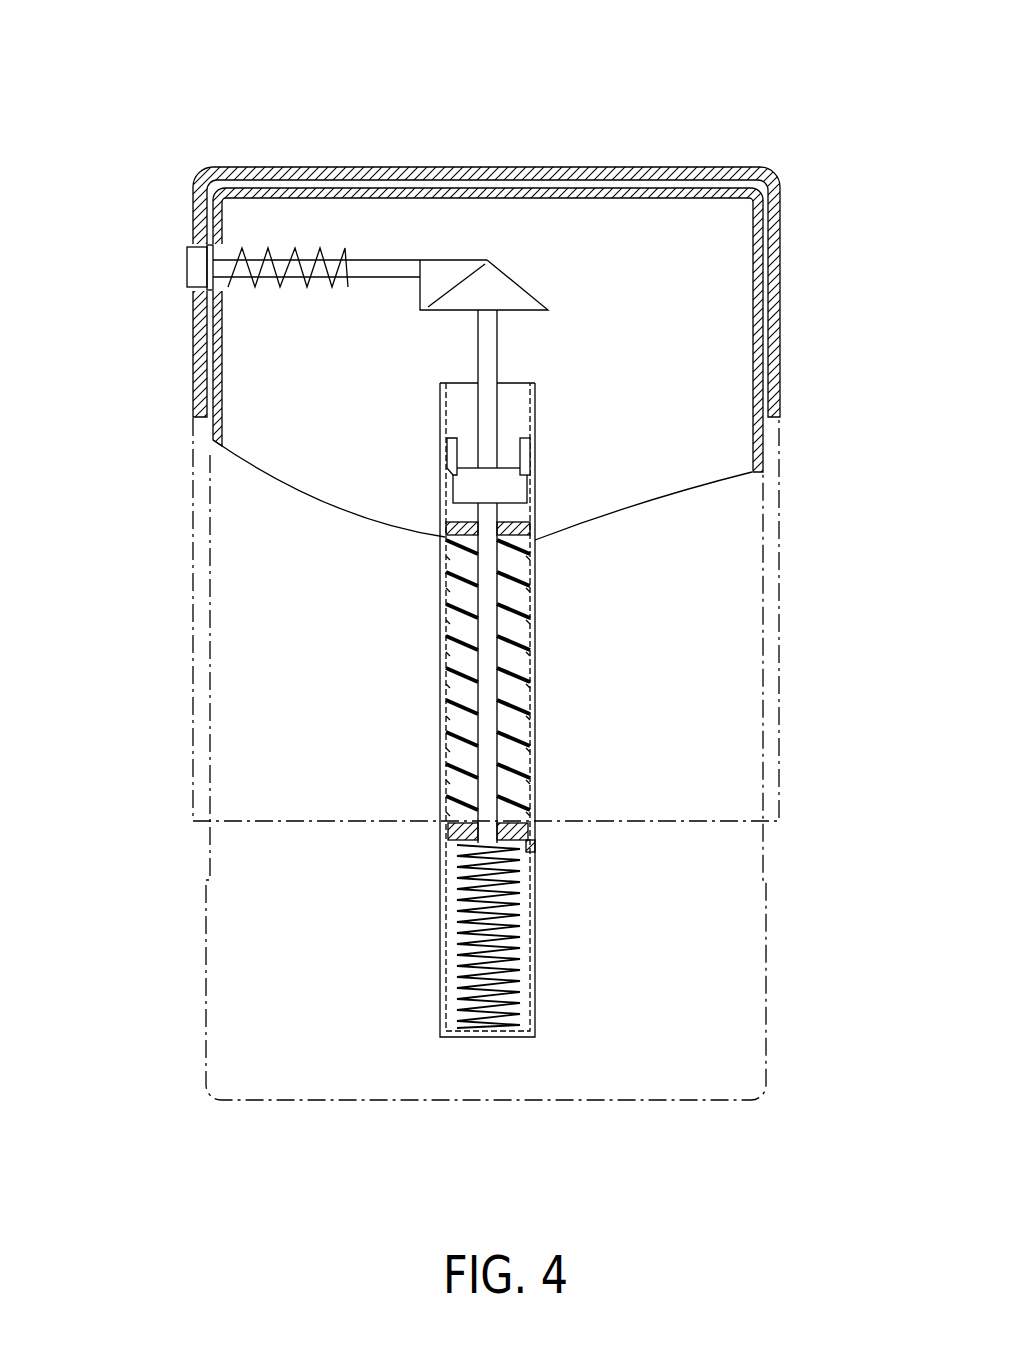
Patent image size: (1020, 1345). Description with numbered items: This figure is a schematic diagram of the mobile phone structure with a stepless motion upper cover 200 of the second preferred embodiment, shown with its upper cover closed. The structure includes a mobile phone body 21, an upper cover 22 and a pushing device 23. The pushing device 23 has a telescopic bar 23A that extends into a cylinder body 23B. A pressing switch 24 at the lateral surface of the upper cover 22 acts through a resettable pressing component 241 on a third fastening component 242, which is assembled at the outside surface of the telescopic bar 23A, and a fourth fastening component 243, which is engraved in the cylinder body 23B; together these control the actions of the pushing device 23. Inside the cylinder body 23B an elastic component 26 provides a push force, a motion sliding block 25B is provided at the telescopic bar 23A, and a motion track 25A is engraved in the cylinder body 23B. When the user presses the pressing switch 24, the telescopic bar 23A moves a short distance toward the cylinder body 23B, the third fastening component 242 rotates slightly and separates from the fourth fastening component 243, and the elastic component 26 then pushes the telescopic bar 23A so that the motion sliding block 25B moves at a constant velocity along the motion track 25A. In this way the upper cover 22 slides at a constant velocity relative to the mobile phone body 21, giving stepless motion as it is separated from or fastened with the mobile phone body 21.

The mobile phone structure with a stepless motion upper cover 200 is at (180, 111).
The mobile phone body 21 is at (767, 1030).
The upper cover 22 is at (780, 296).
The pushing device 23 is at (655, 586).
The telescopic bar 23A is at (492, 333).
The cylinder body 23B is at (532, 742).
The pressing switch 24 is at (345, 310).
The resettable pressing component 241 is at (287, 260).
The third fastening component 242 is at (515, 490).
The fourth fastening component 243 is at (450, 452).
The motion track 25A is at (445, 734).
The motion sliding block 25B is at (448, 833).
The elastic component 26 is at (513, 940).